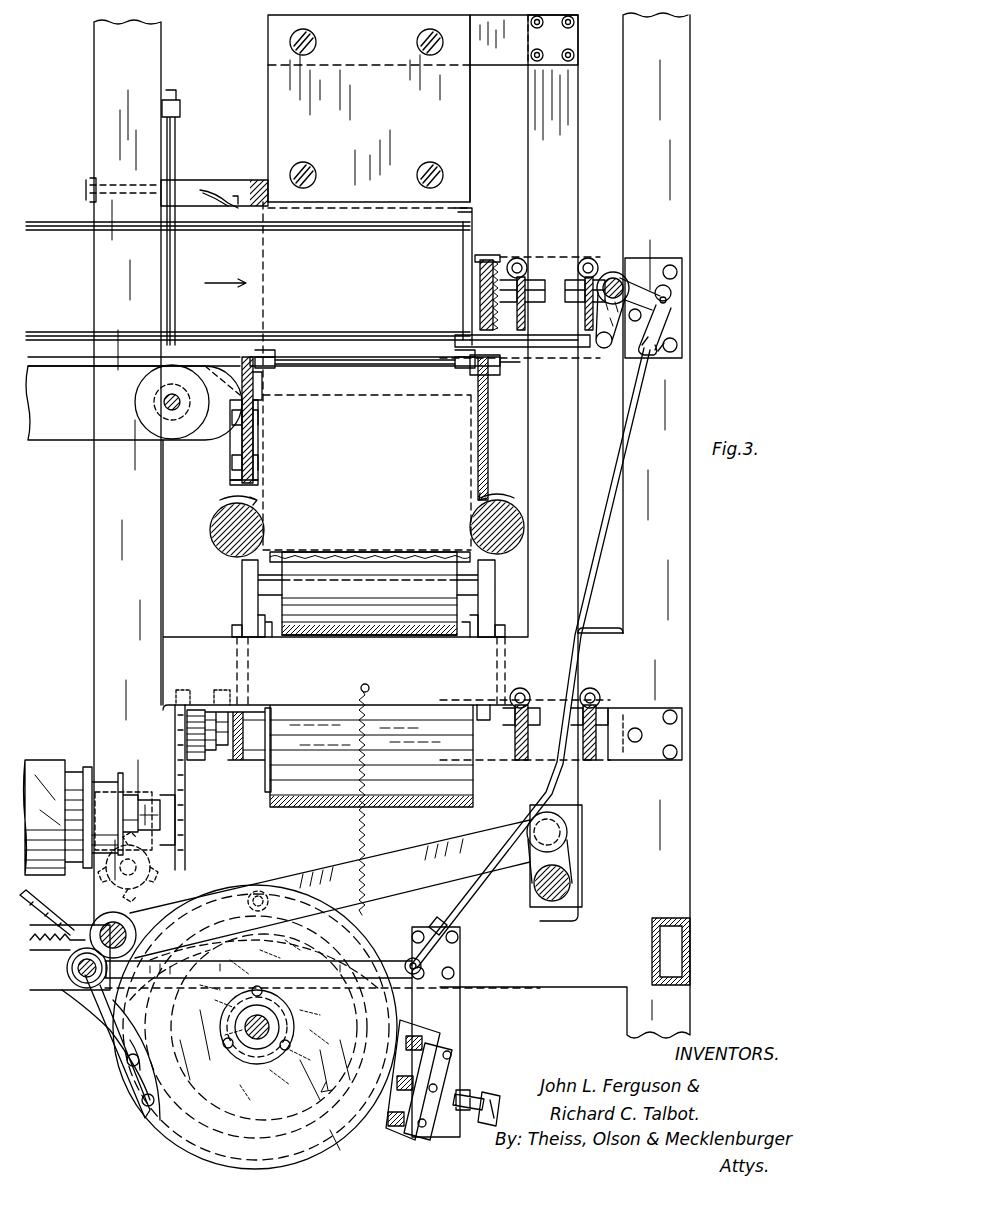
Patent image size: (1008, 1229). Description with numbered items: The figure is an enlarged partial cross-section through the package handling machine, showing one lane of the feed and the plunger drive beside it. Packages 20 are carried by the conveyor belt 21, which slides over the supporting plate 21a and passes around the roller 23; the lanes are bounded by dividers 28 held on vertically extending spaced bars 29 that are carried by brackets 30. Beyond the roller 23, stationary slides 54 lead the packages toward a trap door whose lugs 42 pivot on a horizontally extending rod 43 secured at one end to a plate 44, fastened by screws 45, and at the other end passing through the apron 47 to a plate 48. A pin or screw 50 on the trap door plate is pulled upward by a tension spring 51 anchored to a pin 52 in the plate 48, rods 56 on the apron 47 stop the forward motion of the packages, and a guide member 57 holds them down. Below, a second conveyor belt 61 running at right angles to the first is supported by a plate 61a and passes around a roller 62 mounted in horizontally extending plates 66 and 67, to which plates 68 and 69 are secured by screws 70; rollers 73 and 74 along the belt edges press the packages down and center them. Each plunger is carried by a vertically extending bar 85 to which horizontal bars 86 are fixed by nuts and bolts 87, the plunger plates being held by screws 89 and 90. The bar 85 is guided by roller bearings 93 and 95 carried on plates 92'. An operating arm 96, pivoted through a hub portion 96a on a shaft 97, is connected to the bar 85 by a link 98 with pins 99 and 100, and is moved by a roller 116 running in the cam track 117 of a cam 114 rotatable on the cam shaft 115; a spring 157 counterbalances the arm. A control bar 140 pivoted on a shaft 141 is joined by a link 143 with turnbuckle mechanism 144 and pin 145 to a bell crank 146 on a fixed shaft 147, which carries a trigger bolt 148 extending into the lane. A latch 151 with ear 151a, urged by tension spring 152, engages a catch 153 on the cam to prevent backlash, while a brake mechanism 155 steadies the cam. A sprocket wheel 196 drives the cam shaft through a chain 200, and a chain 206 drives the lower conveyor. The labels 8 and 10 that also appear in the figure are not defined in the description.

The card 8 is at (392, 110).
The slide bar 10 is at (203, 360).
The packages 20 is at (238, 485).
The conveyor belt 21 is at (36, 362).
The plate 21a is at (52, 368).
The roller 23 is at (132, 404).
The dividers 28 is at (352, 232).
The vertically extending spaced bars 29 is at (182, 240).
The brackets 30 is at (182, 108).
The lug 42 is at (278, 372).
The horizontally extending rod 43 is at (378, 370).
The plate 44 is at (260, 455).
The screws 45 is at (258, 428).
The apron 47 is at (476, 255).
The plate 48 is at (484, 256).
The pin or screw 50 is at (492, 372).
The tension springs 51 is at (522, 321).
The pins 52 is at (515, 262).
The stationary slides 54 is at (262, 402).
The rods 56 is at (478, 284).
The guide member 57 is at (218, 185).
The conveyor belt 61 is at (383, 552).
The plate 61a is at (340, 552).
The roller 62 is at (430, 636).
The horizontally extending plate 66 is at (243, 578).
The horizontally extending plate 67 is at (494, 576).
The horizontally extending plate 68 is at (232, 620).
The horizontally extending plate 69 is at (495, 598).
The screws 70 is at (231, 628).
The roller 73 is at (216, 520).
The roller 74 is at (470, 522).
The vertically extending bar 85 is at (578, 155).
The horizontal bars 86 is at (492, 68).
The nuts and bolts 87 is at (578, 36).
The screws 89 is at (316, 44).
The screws 90 is at (316, 172).
The plates 92' is at (588, 753).
The roller bearings 93 is at (590, 258).
The roller bearings 95 is at (570, 274).
The operating arm 96 is at (402, 855).
The hub portion 96a is at (162, 905).
The shaft 97 is at (82, 912).
The link 98 is at (568, 860).
The pin 99 is at (570, 886).
The pin 100 is at (563, 825).
The cam 114 is at (150, 1138).
The cam shaft 115 is at (268, 1050).
The roller 116 is at (282, 872).
The cam track 117 is at (345, 1148).
The control bar 140 is at (405, 940).
The shaft 141 is at (84, 990).
The link 143 is at (600, 548).
The turnbuckle mechanism 144 is at (682, 345).
The pin 145 is at (668, 300).
The bell crank 146 is at (678, 273).
The fixed shaft 147 is at (616, 274).
The trigger bolt 148 is at (545, 370).
The latch 151 is at (100, 1050).
The ear 151a is at (66, 995).
The tension spring 152 is at (52, 968).
The catch 153 is at (140, 1112).
The brake mechanism 155 is at (496, 1052).
The spring 157 is at (352, 725).
The sprocket wheel 196 is at (192, 818).
The chain 200 is at (240, 948).
The chain 206 is at (186, 778).